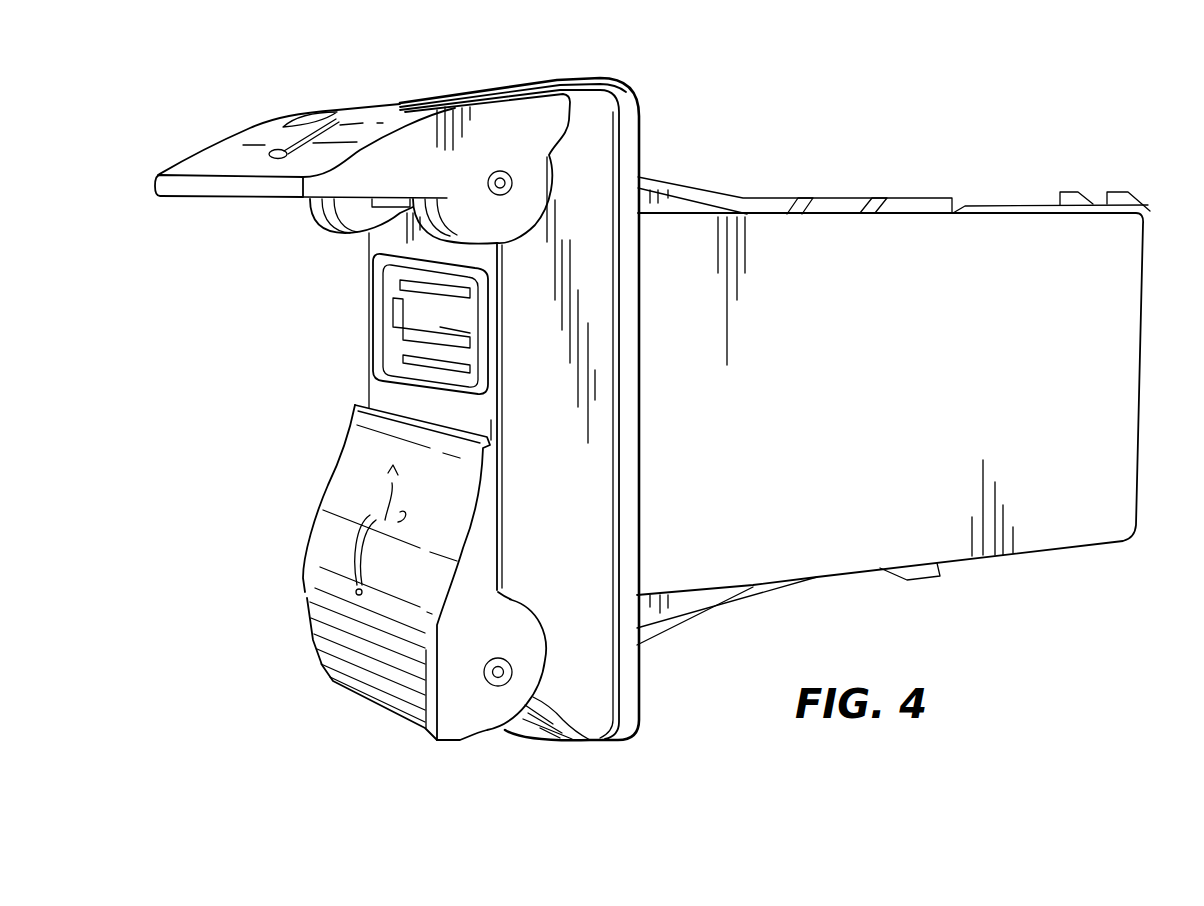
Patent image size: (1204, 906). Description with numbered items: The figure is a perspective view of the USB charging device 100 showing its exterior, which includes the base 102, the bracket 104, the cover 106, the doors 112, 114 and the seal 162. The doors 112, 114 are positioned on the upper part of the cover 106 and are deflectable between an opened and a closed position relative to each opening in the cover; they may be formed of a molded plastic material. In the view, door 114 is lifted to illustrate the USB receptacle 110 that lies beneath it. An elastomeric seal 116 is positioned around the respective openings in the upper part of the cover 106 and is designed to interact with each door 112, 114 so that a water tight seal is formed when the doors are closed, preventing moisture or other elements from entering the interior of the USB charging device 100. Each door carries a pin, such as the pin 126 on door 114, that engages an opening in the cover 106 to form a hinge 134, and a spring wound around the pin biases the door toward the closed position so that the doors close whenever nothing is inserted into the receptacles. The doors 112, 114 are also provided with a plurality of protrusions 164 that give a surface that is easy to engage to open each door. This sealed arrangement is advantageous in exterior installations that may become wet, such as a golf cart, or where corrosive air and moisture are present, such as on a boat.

The USB charging device 100 is at (882, 155).
The base 102 is at (1088, 427).
The bracket 104 is at (707, 610).
The cover 106 is at (593, 706).
The USB receptacle 110 is at (423, 312).
The door 112 is at (330, 548).
The door 114 is at (237, 152).
The elastomeric seal 116 is at (383, 382).
The pin 126 is at (505, 183).
The hinge 134 is at (325, 223).
The seal 162 is at (634, 130).
The protrusions 164 is at (330, 657).